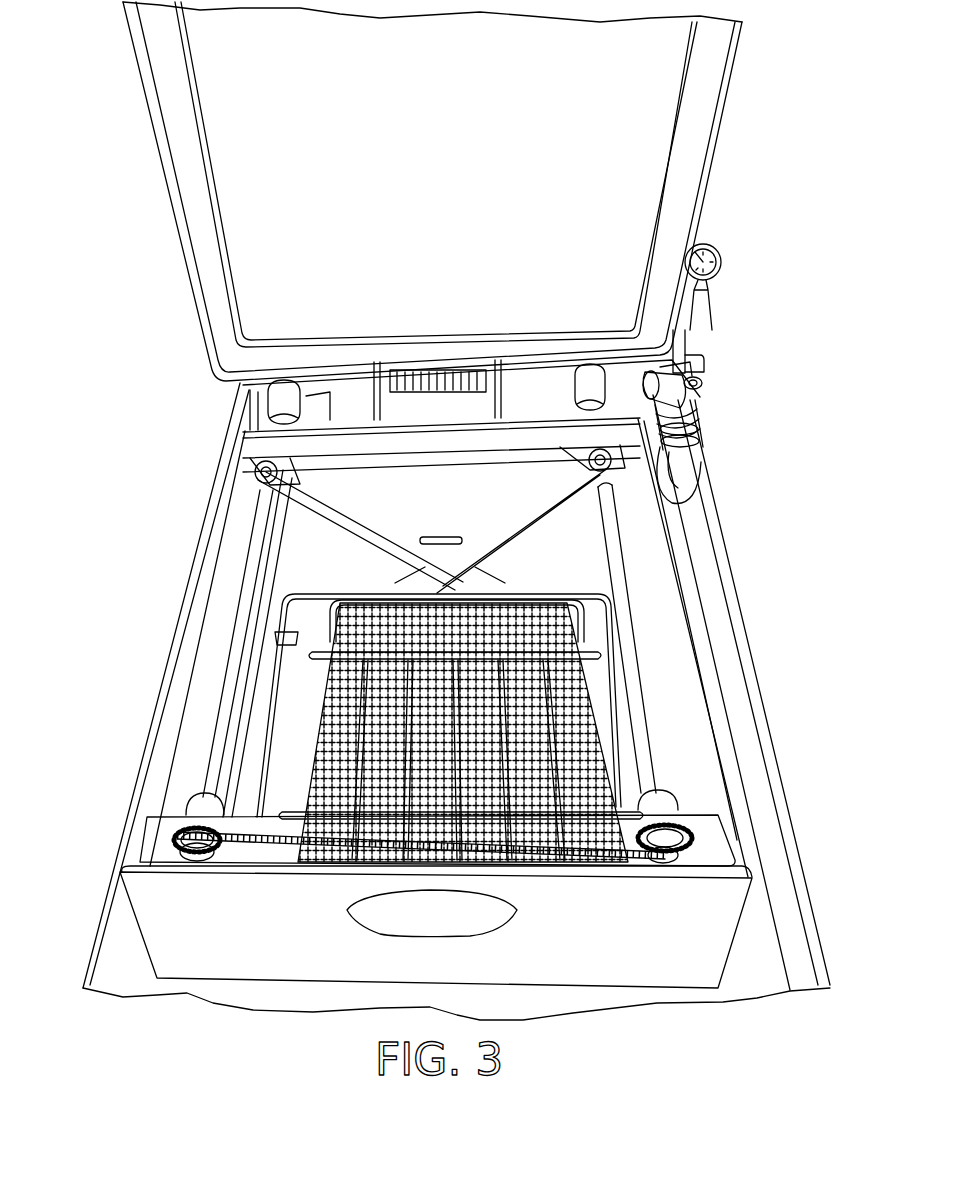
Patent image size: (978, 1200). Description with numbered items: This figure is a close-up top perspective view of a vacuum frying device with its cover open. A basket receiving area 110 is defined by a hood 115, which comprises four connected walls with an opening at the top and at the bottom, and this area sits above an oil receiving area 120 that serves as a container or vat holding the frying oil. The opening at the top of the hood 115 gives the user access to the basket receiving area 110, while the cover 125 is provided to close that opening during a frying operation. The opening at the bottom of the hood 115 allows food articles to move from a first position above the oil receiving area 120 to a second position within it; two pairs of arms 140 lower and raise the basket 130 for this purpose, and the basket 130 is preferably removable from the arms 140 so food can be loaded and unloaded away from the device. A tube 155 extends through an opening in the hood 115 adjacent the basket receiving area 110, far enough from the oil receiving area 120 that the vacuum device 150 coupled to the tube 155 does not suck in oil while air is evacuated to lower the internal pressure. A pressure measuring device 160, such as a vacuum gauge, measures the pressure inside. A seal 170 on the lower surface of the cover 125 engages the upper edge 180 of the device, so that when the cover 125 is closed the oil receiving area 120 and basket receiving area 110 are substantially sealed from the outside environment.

The basket receiving area 110 is at (170, 906).
The hood 115 is at (290, 943).
The oil receiving area 120 is at (758, 970).
The cover 125 is at (615, 128).
The basket 130 is at (565, 707).
The arms 140 is at (507, 547).
The vacuum device 150 is at (690, 383).
The tube 155 is at (694, 462).
The pressure measuring device 160 is at (712, 268).
The seal 170 is at (683, 202).
The upper edge 180 is at (743, 843).